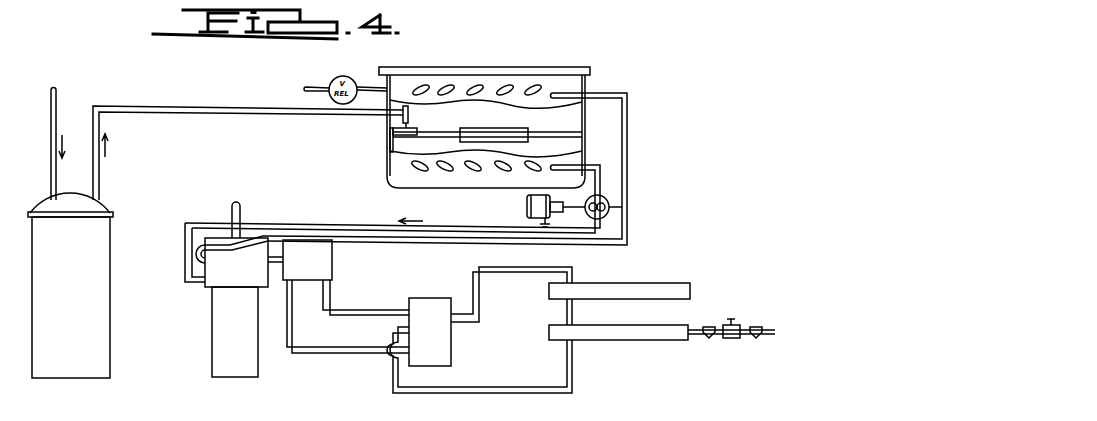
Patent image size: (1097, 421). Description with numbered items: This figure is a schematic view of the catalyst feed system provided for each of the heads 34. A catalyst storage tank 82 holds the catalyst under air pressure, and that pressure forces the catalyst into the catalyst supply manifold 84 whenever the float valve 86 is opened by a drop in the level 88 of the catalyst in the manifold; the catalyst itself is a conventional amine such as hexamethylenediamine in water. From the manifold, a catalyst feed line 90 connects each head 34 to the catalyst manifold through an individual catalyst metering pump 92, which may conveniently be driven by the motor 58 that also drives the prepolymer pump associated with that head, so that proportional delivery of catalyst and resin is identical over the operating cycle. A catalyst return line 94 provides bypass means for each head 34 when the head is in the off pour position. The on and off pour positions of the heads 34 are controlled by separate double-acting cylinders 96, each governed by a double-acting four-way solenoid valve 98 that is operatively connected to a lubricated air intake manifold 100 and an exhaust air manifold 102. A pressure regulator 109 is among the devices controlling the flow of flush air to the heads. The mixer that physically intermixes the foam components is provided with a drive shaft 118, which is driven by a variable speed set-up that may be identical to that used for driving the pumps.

The head 34 is at (228, 275).
The motor 58 is at (525, 204).
The catalyst storage tank 82 is at (82, 272).
The catalyst supply manifold 84 is at (483, 67).
The float valve 86 is at (408, 124).
The level of the catalyst 88 is at (543, 118).
The catalyst feed line 90 is at (585, 166).
The catalyst metering pump 92 is at (627, 208).
The catalyst return line 94 is at (627, 92).
The double-acting cylinder 96 is at (310, 280).
The double-acting four-way solenoid valve 98 is at (421, 298).
The lubricated air intake manifold 100 is at (648, 318).
The exhaust air manifold 102 is at (663, 283).
The pressure regulator 109 is at (738, 323).
The drive shaft 118 is at (245, 223).